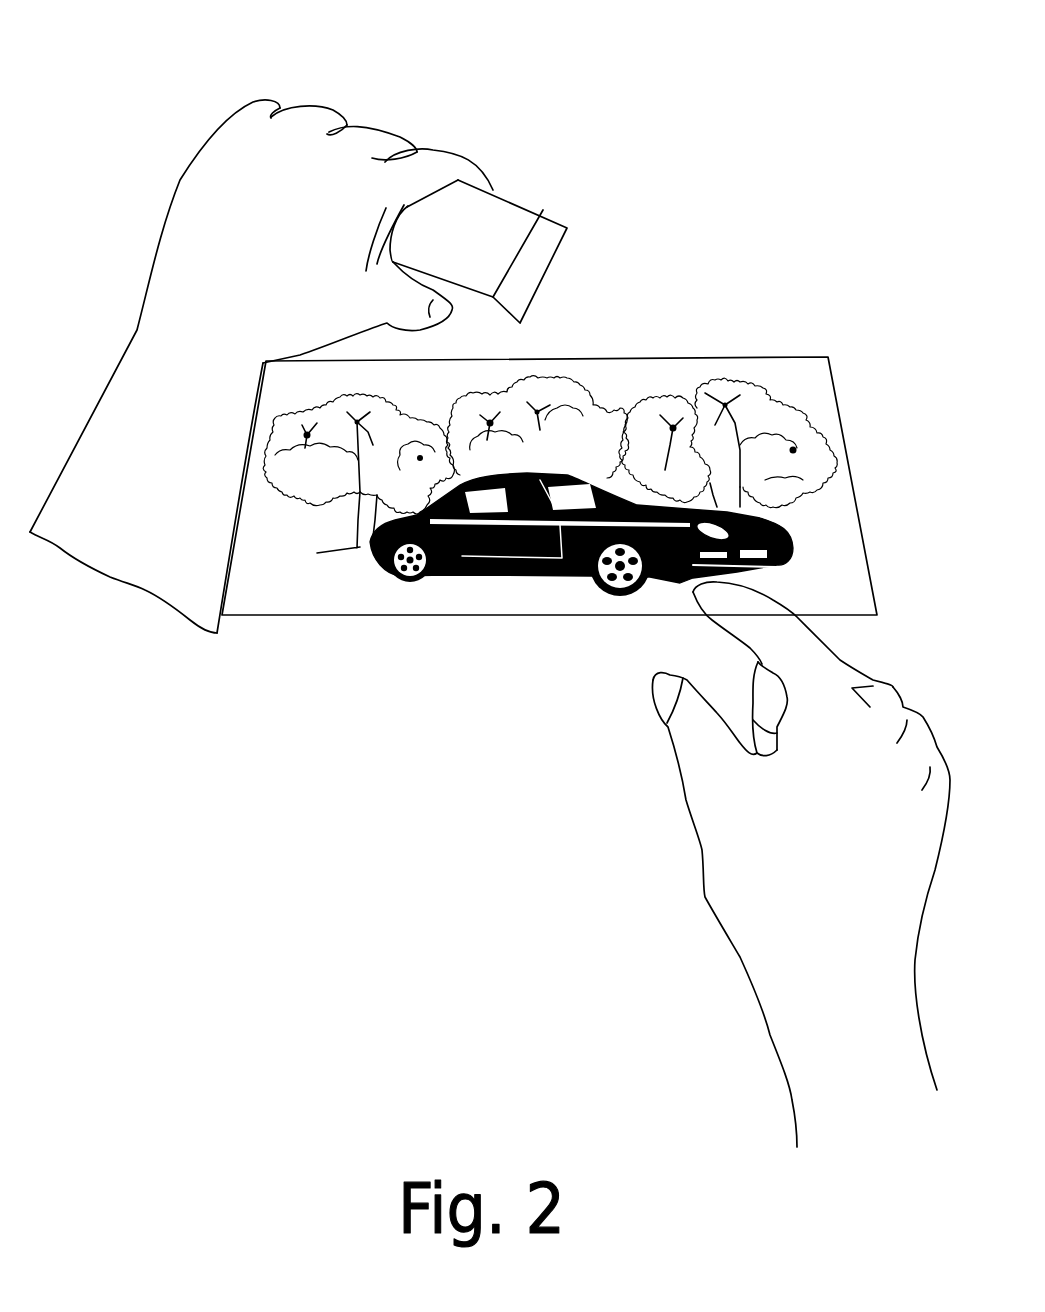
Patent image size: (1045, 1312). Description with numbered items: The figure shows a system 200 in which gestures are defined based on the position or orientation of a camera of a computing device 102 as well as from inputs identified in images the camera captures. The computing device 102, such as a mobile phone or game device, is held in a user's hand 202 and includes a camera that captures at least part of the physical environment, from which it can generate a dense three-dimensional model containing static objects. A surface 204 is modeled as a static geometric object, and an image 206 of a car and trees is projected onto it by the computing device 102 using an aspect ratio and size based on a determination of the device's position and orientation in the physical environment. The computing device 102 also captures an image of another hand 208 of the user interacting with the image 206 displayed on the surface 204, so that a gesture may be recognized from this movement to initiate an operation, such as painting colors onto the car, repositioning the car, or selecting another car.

The system 200 is at (185, 73).
The user's hand 202 is at (238, 285).
The computing device 102 is at (543, 210).
The surface 204 is at (760, 355).
The image 206 is at (397, 577).
The another hand 208 is at (808, 854).